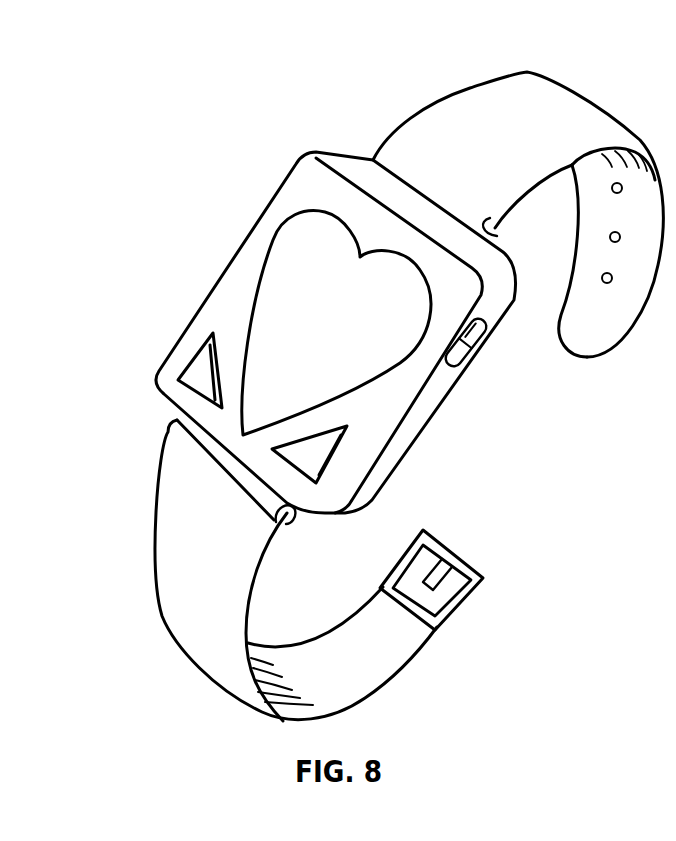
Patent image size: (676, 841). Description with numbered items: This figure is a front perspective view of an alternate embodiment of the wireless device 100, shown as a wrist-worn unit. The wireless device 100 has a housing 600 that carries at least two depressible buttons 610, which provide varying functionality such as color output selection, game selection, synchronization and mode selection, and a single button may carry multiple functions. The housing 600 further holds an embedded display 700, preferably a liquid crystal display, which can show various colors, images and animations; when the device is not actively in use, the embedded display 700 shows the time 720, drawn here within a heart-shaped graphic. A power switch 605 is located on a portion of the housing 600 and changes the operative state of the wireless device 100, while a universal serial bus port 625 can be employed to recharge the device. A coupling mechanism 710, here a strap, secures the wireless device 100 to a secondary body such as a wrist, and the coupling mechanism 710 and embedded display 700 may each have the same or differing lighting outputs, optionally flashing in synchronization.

The wireless device 100 is at (124, 42).
The housing 600 is at (230, 264).
The power switch 605 is at (491, 378).
The depressible buttons 610 is at (193, 373).
The universal serial bus port 625 is at (174, 299).
The embedded display 700 is at (314, 236).
The coupling mechanism 710 is at (450, 135).
The time 720 is at (365, 372).